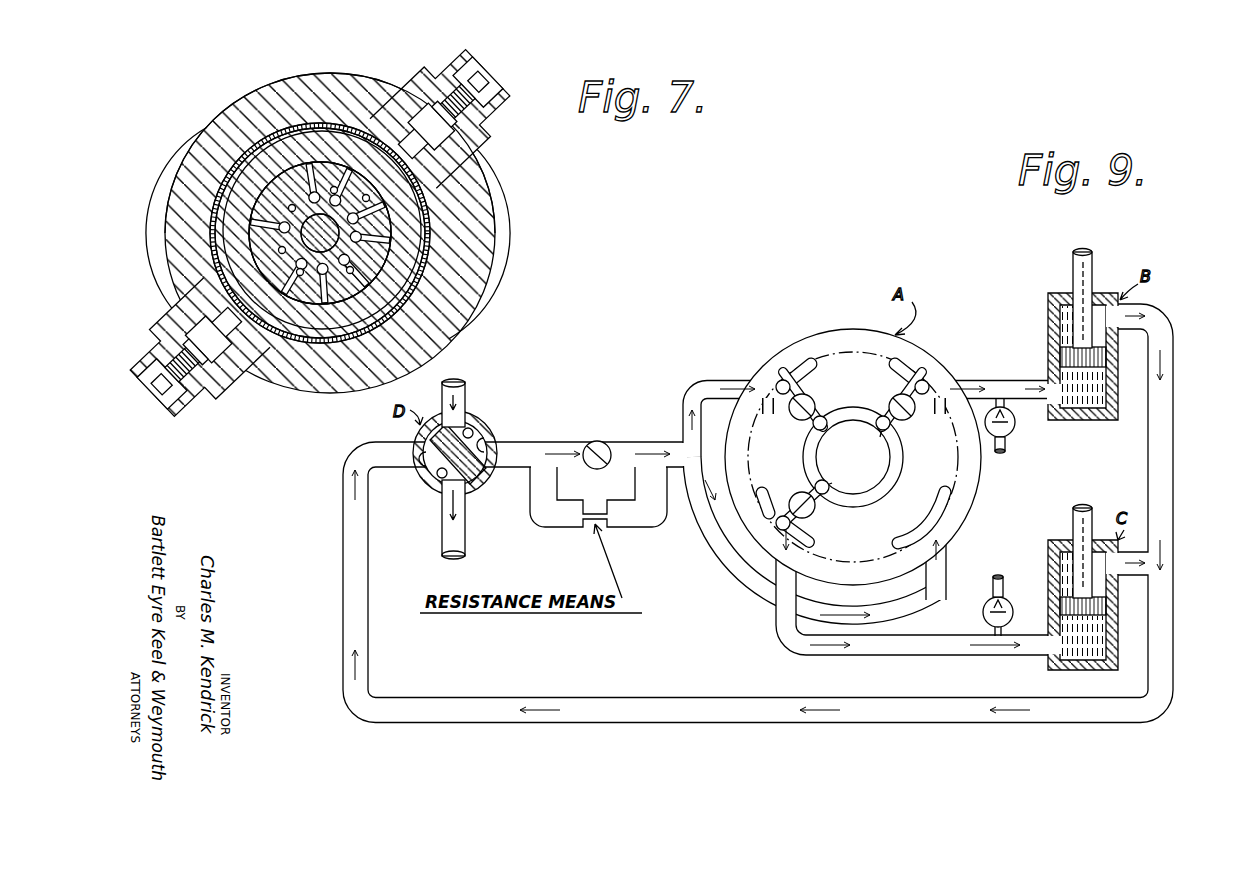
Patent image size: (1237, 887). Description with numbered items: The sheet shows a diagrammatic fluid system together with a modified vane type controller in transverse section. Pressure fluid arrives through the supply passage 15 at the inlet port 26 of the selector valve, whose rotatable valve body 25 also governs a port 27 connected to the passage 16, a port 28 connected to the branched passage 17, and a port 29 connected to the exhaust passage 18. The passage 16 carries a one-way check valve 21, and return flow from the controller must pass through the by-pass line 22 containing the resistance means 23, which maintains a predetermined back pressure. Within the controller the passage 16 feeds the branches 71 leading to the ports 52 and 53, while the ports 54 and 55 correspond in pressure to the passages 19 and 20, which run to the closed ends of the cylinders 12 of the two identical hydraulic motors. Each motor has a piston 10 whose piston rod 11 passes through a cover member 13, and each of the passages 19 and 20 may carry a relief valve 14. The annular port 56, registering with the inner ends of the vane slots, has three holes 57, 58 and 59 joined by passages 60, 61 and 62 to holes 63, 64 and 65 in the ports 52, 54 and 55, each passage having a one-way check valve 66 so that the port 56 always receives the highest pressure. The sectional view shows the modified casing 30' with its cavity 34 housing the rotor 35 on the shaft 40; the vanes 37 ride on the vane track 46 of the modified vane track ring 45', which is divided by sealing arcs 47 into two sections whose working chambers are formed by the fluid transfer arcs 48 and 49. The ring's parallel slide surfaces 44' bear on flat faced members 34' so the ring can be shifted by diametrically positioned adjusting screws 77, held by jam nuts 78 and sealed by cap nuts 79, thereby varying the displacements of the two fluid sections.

In FIG. 9, the piston 10 is at (1092, 362).
In FIG. 9, the piston rod 11 is at (1088, 275).
In FIG. 9, the cylinder 12 is at (1102, 418).
In FIG. 9, the cover member 13 is at (1062, 300).
In FIG. 9, the relief valve 14 is at (1015, 428).
In FIG. 9, the supply passage 15 is at (468, 393).
In FIG. 9, the passage 16 is at (562, 442).
In FIG. 9, the branched passage 17 is at (370, 555).
In FIG. 9, the exhaust passage 18 is at (466, 548).
In FIG. 9, the passage 19 is at (1003, 382).
In FIG. 9, the passage 20 is at (776, 624).
In FIG. 9, the one-way check valve 21 is at (606, 446).
In FIG. 9, the by-pass line 22 is at (632, 528).
In FIG. 9, the resistance means 23 is at (594, 499).
In FIG. 9, the rotatable valve body 25 is at (472, 480).
In FIG. 9, the inlet port 26 is at (483, 420).
In FIG. 9, the port 27 is at (498, 433).
In FIG. 9, the port 28 is at (424, 470).
In FIG. 9, the port 29 is at (438, 494).
In FIG. 7, the modified casing 30' is at (330, 139).
In FIG. 7, the cavity 34 is at (361, 233).
In FIG. 7, the members 34' is at (320, 233).
In FIG. 7, the rotor 35 is at (412, 178).
In FIG. 7, the vanes 37 is at (178, 180).
In FIG. 7, the shaft 40 is at (320, 233).
In FIG. 7, the slide surfaces 44' is at (325, 222).
In FIG. 7, the modified vane track ring 45' is at (322, 193).
In FIG. 7, the vane track 46 is at (294, 384).
In FIG. 9, the vane track 46 is at (845, 334).
In FIG. 7, the sealing arcs 47 is at (248, 190).
In FIG. 7, the fluid transfer arc 48 is at (462, 158).
In FIG. 7, the fluid transfer arc 49 is at (185, 305).
In FIG. 7, the port 52 is at (331, 168).
In FIG. 9, the port 52 is at (808, 356).
In FIG. 7, the port 53 is at (313, 312).
In FIG. 9, the port 53 is at (952, 498).
In FIG. 7, the port 54 is at (395, 240).
In FIG. 9, the port 54 is at (906, 366).
In FIG. 7, the port 55 is at (228, 247).
In FIG. 9, the port 55 is at (762, 486).
In FIG. 9, the annular groove or port 56 is at (903, 460).
In FIG. 9, the hole 57 is at (820, 430).
In FIG. 9, the hole 58 is at (870, 445).
In FIG. 9, the hole 59 is at (830, 485).
In FIG. 9, the passage 60 is at (816, 412).
In FIG. 9, the passage 61 is at (878, 400).
In FIG. 9, the passage 62 is at (815, 505).
In FIG. 9, the hole 63 is at (776, 372).
In FIG. 9, the hole 64 is at (927, 385).
In FIG. 9, the hole 65 is at (812, 538).
In FIG. 9, the one-way check valve 66 is at (790, 418).
In FIG. 9, the branches or extensions 71 is at (730, 380).
In FIG. 7, the adjusting screws 77 is at (480, 122).
In FIG. 7, the jam nuts 78 is at (480, 134).
In FIG. 7, the cap nuts 79 is at (493, 92).